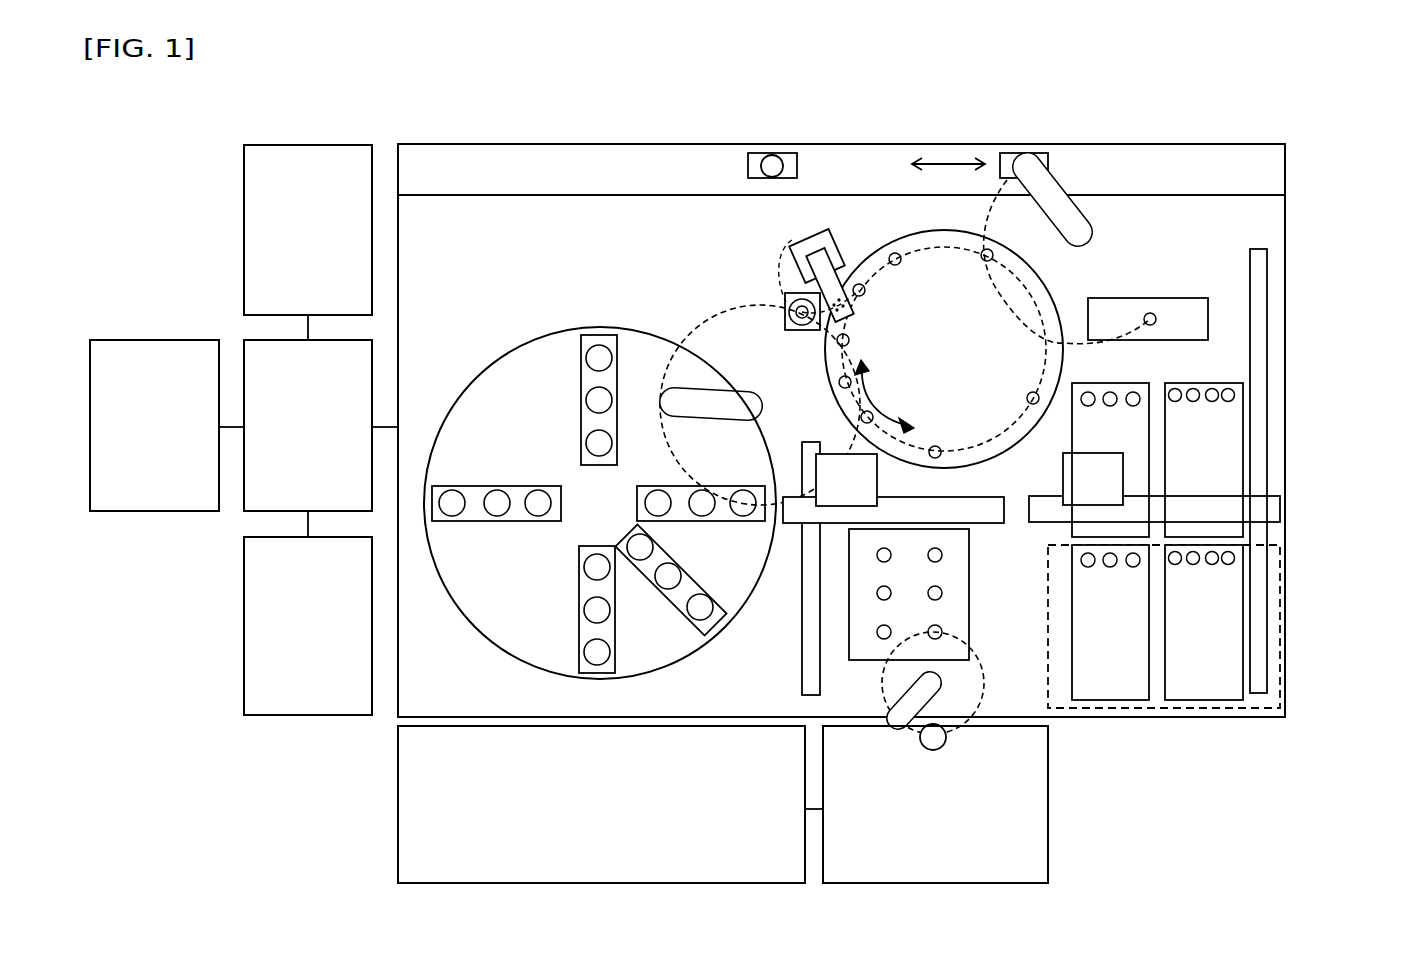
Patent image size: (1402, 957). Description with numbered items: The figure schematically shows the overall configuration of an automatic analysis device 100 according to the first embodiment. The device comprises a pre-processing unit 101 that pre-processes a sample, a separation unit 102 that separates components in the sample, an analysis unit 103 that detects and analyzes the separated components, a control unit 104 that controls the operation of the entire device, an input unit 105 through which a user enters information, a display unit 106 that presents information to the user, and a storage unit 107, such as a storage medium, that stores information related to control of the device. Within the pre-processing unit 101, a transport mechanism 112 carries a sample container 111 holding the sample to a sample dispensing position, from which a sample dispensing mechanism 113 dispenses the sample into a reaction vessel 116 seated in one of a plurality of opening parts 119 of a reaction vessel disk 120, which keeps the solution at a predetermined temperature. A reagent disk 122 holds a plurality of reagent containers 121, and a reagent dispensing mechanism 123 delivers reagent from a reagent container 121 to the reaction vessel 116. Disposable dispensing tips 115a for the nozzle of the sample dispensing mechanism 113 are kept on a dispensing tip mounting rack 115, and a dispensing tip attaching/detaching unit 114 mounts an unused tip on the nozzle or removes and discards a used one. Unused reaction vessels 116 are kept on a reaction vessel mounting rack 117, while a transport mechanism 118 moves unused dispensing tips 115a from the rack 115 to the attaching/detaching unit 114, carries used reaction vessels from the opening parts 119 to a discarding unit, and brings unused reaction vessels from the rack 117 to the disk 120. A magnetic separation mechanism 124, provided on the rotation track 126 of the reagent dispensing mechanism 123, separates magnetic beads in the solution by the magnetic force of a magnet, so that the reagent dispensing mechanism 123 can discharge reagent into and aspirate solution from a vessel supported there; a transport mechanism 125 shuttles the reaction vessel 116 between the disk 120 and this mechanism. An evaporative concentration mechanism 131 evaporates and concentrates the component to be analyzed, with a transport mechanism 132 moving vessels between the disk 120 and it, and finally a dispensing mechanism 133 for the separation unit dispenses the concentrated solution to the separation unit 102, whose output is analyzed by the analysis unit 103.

The automatic analysis device 100 is at (627, 106).
The pre-processing unit 101 is at (1290, 220).
The separation unit 102 is at (951, 819).
The analysis unit 103 is at (618, 819).
The control unit 104 is at (324, 438).
The input unit 105 is at (324, 643).
The display unit 106 is at (324, 245).
The storage unit 107 is at (170, 438).
The sample container 111 is at (755, 153).
The transport mechanism 112 is at (428, 162).
The sample dispensing mechanism 113 is at (1050, 182).
The dispensing tip attaching/detaching unit 114 is at (1152, 302).
The dispensing tip mounting rack 115 is at (1202, 683).
The dispensing tip 115a is at (1183, 388).
The reaction vessel 116 is at (1113, 390).
The reaction vessel mounting rack 117 is at (1112, 683).
The transport mechanism 118 is at (1070, 483).
The opening part 119 is at (897, 262).
The reaction vessel disk 120 is at (958, 364).
The reagent container 121 is at (599, 353).
The reagent disk 122 is at (487, 627).
The reagent dispensing mechanism 123 is at (765, 407).
The magnetic separation mechanism 124 is at (785, 303).
The transport mechanism 125 is at (792, 245).
The rotation track 126 is at (693, 332).
The evaporative concentration mechanism 131 is at (960, 620).
The transport mechanism 132 is at (855, 480).
The dispensing mechanism for the separation unit 133 is at (920, 688).